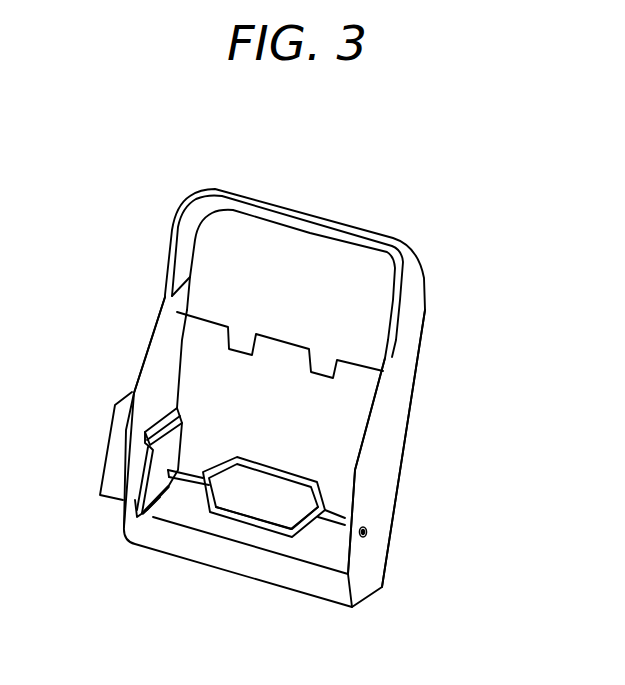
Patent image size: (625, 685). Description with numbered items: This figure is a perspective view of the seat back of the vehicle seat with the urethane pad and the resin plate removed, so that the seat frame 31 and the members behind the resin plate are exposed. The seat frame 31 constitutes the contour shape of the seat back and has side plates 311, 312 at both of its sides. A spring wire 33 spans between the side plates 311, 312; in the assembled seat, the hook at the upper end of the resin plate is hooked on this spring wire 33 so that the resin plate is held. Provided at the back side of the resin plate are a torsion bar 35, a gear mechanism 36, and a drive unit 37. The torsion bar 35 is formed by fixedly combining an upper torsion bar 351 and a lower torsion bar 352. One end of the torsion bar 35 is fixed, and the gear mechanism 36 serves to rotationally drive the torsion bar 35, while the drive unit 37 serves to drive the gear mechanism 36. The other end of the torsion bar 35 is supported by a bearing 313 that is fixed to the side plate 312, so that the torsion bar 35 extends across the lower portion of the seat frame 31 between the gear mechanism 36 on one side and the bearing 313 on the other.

The seat frame 31 is at (404, 248).
The side plate 311 is at (162, 351).
The side plate 312 is at (392, 417).
The bearing 313 is at (368, 532).
The spring wire 33 is at (357, 362).
The torsion bar 35 is at (362, 487).
The upper torsion bar 351 is at (305, 477).
The lower torsion bar 352 is at (283, 525).
The gear mechanism 36 is at (147, 482).
The drive unit 37 is at (115, 447).